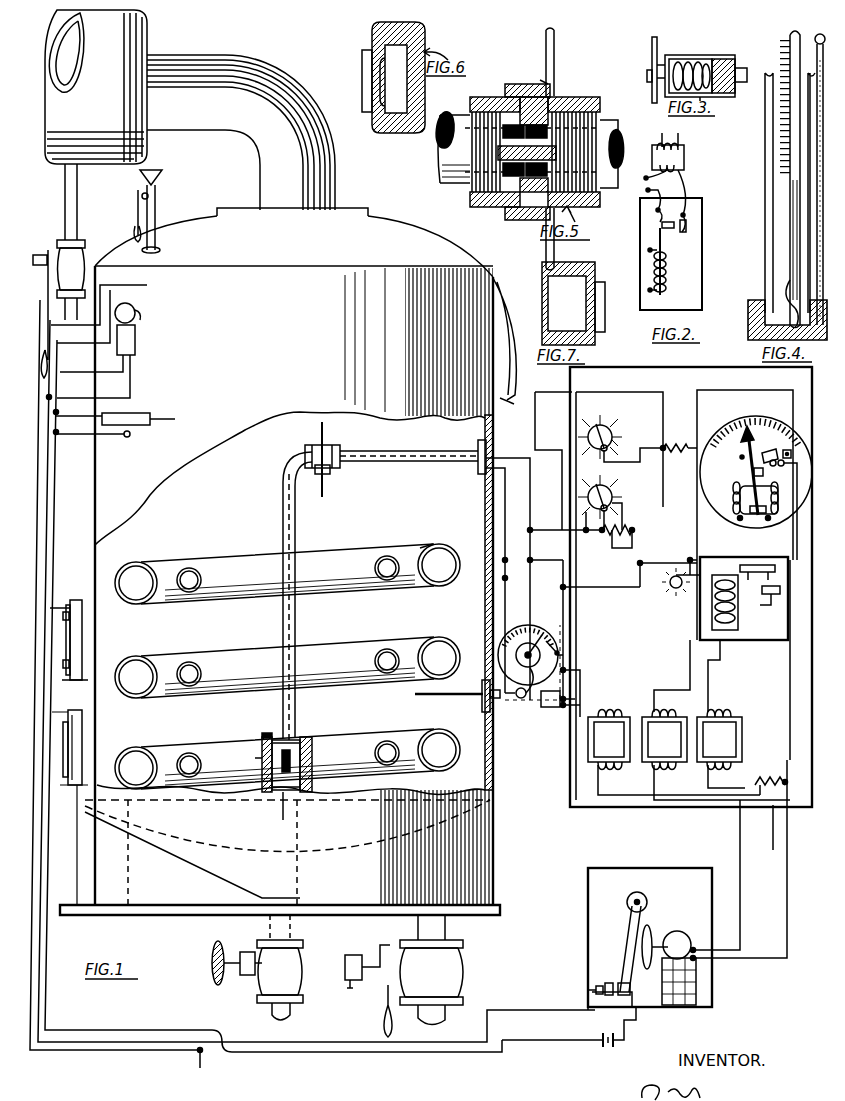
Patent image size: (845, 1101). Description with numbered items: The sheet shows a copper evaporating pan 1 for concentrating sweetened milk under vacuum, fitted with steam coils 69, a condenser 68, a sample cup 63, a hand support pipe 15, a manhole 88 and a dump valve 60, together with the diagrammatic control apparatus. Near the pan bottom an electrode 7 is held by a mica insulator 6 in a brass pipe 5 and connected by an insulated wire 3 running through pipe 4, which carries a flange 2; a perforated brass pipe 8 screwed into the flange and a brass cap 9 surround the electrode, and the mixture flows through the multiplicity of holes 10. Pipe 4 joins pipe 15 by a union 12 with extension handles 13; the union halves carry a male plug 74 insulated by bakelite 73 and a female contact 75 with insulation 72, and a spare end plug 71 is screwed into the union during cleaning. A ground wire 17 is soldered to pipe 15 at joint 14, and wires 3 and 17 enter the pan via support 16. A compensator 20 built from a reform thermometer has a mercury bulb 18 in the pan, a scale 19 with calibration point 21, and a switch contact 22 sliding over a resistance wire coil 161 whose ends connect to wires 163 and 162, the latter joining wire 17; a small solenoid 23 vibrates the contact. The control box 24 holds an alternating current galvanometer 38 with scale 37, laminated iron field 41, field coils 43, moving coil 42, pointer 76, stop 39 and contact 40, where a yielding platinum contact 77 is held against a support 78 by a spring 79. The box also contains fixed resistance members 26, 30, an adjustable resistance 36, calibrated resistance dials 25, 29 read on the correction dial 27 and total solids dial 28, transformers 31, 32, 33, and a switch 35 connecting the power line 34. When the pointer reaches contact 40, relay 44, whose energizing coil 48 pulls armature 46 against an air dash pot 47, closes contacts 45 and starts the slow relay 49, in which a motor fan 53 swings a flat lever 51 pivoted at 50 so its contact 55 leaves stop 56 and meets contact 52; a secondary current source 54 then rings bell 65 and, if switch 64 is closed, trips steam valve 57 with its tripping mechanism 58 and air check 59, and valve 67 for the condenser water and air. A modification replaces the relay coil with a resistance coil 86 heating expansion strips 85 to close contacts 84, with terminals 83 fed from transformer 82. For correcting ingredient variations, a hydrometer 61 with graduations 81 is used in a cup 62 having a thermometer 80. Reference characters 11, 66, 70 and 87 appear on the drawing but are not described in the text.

In FIG. 1, the evaporating pan 1 is at (280, 561).
In FIG. 1, the flange 2 is at (300, 737).
In FIG. 1, the insulated wire 3 is at (282, 618).
In FIG. 1, the pipe 4 is at (275, 625).
In FIG. 1, the brass pipe 5 is at (268, 733).
In FIG. 1, the mica insulator 6 is at (300, 745).
In FIG. 1, the electrode 7 is at (306, 788).
In FIG. 1, the brass pipe 8 is at (258, 758).
In FIG. 1, the brass cap 9 is at (280, 800).
In FIG. 1, the holes 10 is at (291, 754).
In FIG. 1, the fitting 11 is at (334, 447).
In FIG. 1, the union 12 is at (292, 478).
In FIG. 5, the union 12 is at (569, 76).
In FIG. 1, the extension handles 13 is at (326, 484).
In FIG. 5, the extension handles 13 is at (568, 149).
In FIG. 1, the soldered joint 14 is at (332, 470).
In FIG. 1, the hand support pipe 15 is at (412, 466).
In FIG. 1, the support 16 is at (477, 468).
In FIG. 1, the ground wire 17 is at (507, 580).
In FIG. 1, the mercury bulb 18 is at (457, 699).
In FIG. 1, the thermometer scale 19 is at (527, 625).
In FIG. 1, the compensator 20 is at (516, 698).
In FIG. 1, the point 21 is at (544, 628).
In FIG. 1, the switch contact 22 is at (559, 635).
In FIG. 1, the solenoid 23 is at (554, 689).
In FIG. 1, the control box 24 is at (691, 587).
In FIG. 1, the calibrated resistance dial 25 is at (626, 432).
In FIG. 1, the fixed resistance member 26 is at (675, 437).
In FIG. 1, the correction dial 27 is at (596, 427).
In FIG. 1, the total solids dial 28 is at (596, 493).
In FIG. 1, the calibrated resistance 29 is at (624, 508).
In FIG. 1, the fixed resistance member 30 is at (613, 539).
In FIG. 1, the transformer 31 is at (674, 753).
In FIG. 1, the transformer 32 is at (716, 720).
In FIG. 1, the transformer 33 is at (721, 714).
In FIG. 1, the power line 34 is at (739, 860).
In FIG. 1, the switch 35 is at (762, 778).
In FIG. 1, the adjustable fixed resistance member 36 is at (671, 582).
In FIG. 1, the scale 37 is at (735, 432).
In FIG. 1, the galvanometer 38 is at (758, 428).
In FIG. 1, the stop 39 is at (738, 460).
In FIG. 1, the contact 40 is at (794, 440).
In FIG. 3, the contact 40 is at (727, 107).
In FIG. 1, the laminated iron field 41 is at (785, 510).
In FIG. 1, the moving coil 42 is at (757, 510).
In FIG. 1, the coils 43 is at (732, 495).
In FIG. 1, the relay 44 is at (730, 641).
In FIG. 1, the contacts 45 is at (769, 584).
In FIG. 1, the armature 46 is at (748, 560).
In FIG. 1, the air dash pot 47 is at (678, 559).
In FIG. 1, the energizing coil 48 is at (739, 606).
In FIG. 1, the slow relay 49 is at (656, 877).
In FIG. 1, the pivot 50 is at (650, 896).
In FIG. 1, the flat lever 51 is at (628, 932).
In FIG. 1, the contact 52 is at (592, 988).
In FIG. 1, the electric motor fan 53 is at (664, 938).
In FIG. 1, the secondary source of current 54 is at (601, 1049).
In FIG. 1, the contact 55 is at (609, 980).
In FIG. 1, the stop 56 is at (638, 984).
In FIG. 1, the steam valve 57 is at (431, 970).
In FIG. 1, the tripping mechanism 58 is at (393, 1022).
In FIG. 1, the air check 59 is at (349, 984).
In FIG. 1, the valve 60 is at (252, 980).
In FIG. 1, the hydrometer 61 is at (85, 720).
In FIG. 4, the hydrometer 61 is at (783, 167).
In FIG. 1, the cup 62 is at (85, 742).
In FIG. 4, the cup 62 is at (780, 206).
In FIG. 1, the sample cup 63 is at (75, 600).
In FIG. 1, the switch 64 is at (115, 433).
In FIG. 1, the bell 65 is at (112, 350).
In FIG. 1, the funnel 66 is at (161, 211).
In FIG. 1, the valve 67 is at (71, 271).
In FIG. 1, the condenser 68 is at (96, 87).
In FIG. 1, the steam coils 69 is at (392, 572).
In FIG. 6, the bracket 70 is at (379, 77).
In FIG. 7, the end plug 71 is at (573, 303).
In FIG. 5, the insulation 72 is at (500, 190).
In FIG. 5, the bakelite or hard rubber insulation 73 is at (558, 110).
In FIG. 5, the male plug 74 is at (604, 152).
In FIG. 5, the female metal contact 75 is at (470, 158).
In FIG. 1, the pointer 76 is at (752, 473).
In FIG. 3, the pointer 76 is at (645, 70).
In FIG. 3, the yielding platinum contact 77 is at (684, 60).
In FIG. 3, the support 78 is at (750, 63).
In FIG. 3, the spring 79 is at (724, 60).
In FIG. 4, the thermometer 80 is at (818, 162).
In FIG. 4, the graduations 81 is at (790, 155).
In FIG. 2, the transformer 82 is at (683, 152).
In FIG. 2, the terminals 83 is at (655, 192).
In FIG. 2, the contacts 84 is at (671, 215).
In FIG. 2, the expansion strips 85 is at (675, 261).
In FIG. 2, the resistance coil 86 is at (677, 272).
In FIG. 2, the housing 87 is at (688, 254).
In FIG. 1, the manhole 88 is at (507, 352).
In FIG. 1, the resistance wire coil 161 is at (583, 632).
In FIG. 1, the wire 162 is at (508, 596).
In FIG. 1, the wire 163 is at (585, 638).